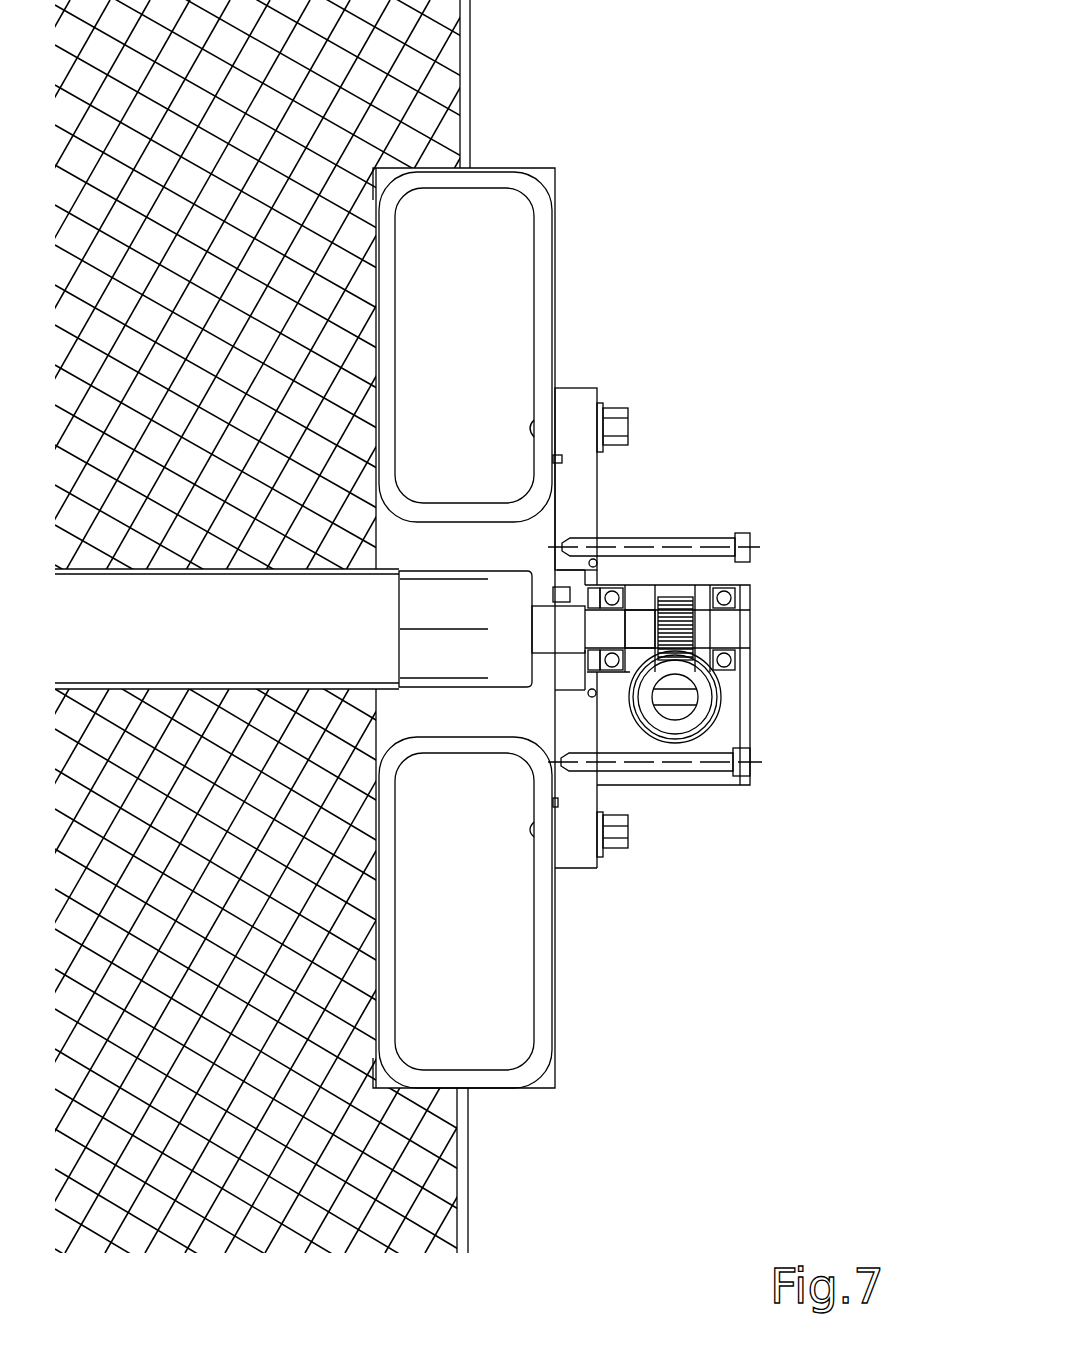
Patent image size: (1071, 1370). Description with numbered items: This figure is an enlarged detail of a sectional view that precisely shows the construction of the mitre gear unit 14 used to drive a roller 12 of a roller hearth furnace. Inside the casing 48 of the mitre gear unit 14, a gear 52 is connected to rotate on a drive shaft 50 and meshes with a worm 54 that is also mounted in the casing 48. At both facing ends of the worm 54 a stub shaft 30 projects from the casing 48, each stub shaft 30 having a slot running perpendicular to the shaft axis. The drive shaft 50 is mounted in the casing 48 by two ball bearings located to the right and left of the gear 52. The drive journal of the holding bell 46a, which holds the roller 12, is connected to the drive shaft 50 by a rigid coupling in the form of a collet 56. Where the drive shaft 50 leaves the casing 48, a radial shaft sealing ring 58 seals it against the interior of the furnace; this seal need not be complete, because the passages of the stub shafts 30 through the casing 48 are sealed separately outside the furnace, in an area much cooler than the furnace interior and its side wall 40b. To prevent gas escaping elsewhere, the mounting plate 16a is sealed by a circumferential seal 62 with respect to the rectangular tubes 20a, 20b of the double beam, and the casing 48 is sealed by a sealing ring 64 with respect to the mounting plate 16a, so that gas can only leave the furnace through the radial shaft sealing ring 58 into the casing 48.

The roller 12 is at (257, 645).
The mitre gear unit 14 is at (737, 797).
The mounting plate 16a is at (557, 388).
The rectangular tube 20a is at (545, 296).
The rectangular tube 20b is at (545, 1007).
The stub shaft 30 is at (675, 712).
The side wall 40b is at (326, 1097).
The holding bell 46a is at (468, 645).
The casing 48 is at (745, 577).
The drive shaft 50 is at (678, 598).
The gear 52 is at (738, 578).
The worm 54 is at (713, 698).
The collet 56 is at (553, 623).
The radial shaft sealing ring 58 is at (640, 623).
The circumferential seal 62 is at (557, 455).
The sealing ring 64 is at (592, 693).